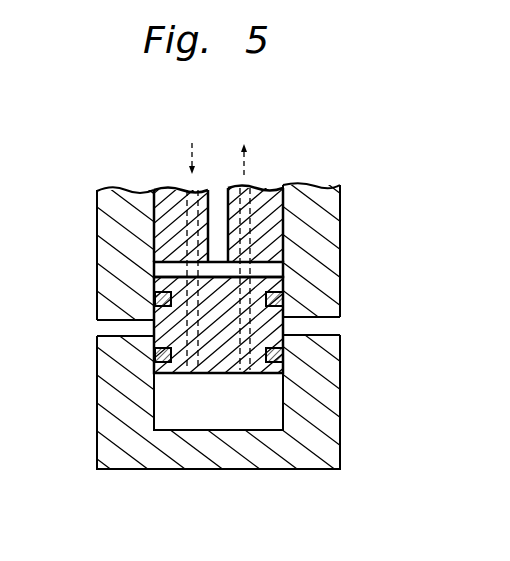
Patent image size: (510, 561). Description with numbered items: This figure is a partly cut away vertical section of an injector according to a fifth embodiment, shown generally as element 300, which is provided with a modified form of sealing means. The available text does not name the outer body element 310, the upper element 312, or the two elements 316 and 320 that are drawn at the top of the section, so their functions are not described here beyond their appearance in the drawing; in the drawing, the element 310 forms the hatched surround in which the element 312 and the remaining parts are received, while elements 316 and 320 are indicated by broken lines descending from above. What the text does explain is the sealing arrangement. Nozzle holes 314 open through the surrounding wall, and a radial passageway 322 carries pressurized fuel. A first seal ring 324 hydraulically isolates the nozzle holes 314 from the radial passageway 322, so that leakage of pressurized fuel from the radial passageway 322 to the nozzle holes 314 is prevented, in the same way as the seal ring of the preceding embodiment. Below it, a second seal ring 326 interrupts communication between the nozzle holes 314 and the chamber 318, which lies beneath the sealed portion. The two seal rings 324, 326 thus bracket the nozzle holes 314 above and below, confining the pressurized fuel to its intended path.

The fluid pressure device 300 is at (244, 286).
The housing 310 is at (97, 279).
The upper piston portion 312 is at (162, 227).
The nozzle holes 314 is at (392, 328).
The inlet passage 316 is at (178, 202).
The chamber 318 is at (232, 424).
The outlet passage 320 is at (262, 196).
The radial passageway 322 is at (281, 248).
The first seal ring 324 is at (284, 301).
The second seal ring 326 is at (288, 357).